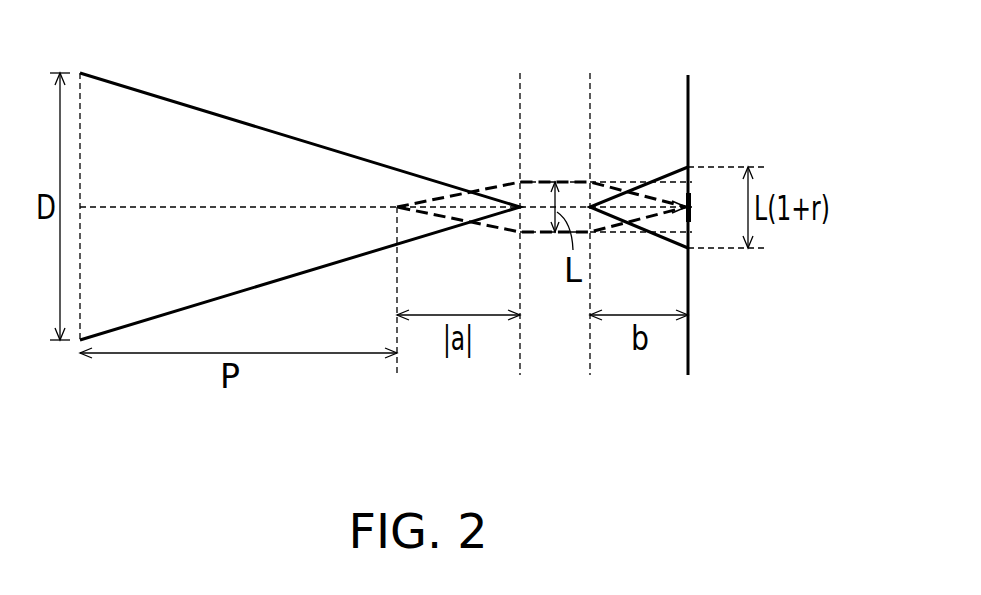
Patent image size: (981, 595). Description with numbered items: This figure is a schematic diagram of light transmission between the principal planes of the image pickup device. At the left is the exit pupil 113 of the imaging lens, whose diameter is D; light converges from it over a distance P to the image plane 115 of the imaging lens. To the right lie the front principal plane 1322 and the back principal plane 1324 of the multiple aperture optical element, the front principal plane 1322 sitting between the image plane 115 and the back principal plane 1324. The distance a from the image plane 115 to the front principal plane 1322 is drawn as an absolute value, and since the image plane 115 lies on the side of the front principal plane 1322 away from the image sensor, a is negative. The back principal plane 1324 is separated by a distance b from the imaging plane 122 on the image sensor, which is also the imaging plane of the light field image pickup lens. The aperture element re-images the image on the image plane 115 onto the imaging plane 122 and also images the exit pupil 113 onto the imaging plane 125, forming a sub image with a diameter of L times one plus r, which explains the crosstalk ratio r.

The exit pupil 113 is at (80, 138).
The image plane 115 is at (397, 370).
The front principal plane 1322 is at (520, 85).
The back principal plane 1324 is at (590, 85).
The imaging plane 122 is at (687, 85).
The imaging plane 125 is at (692, 218).